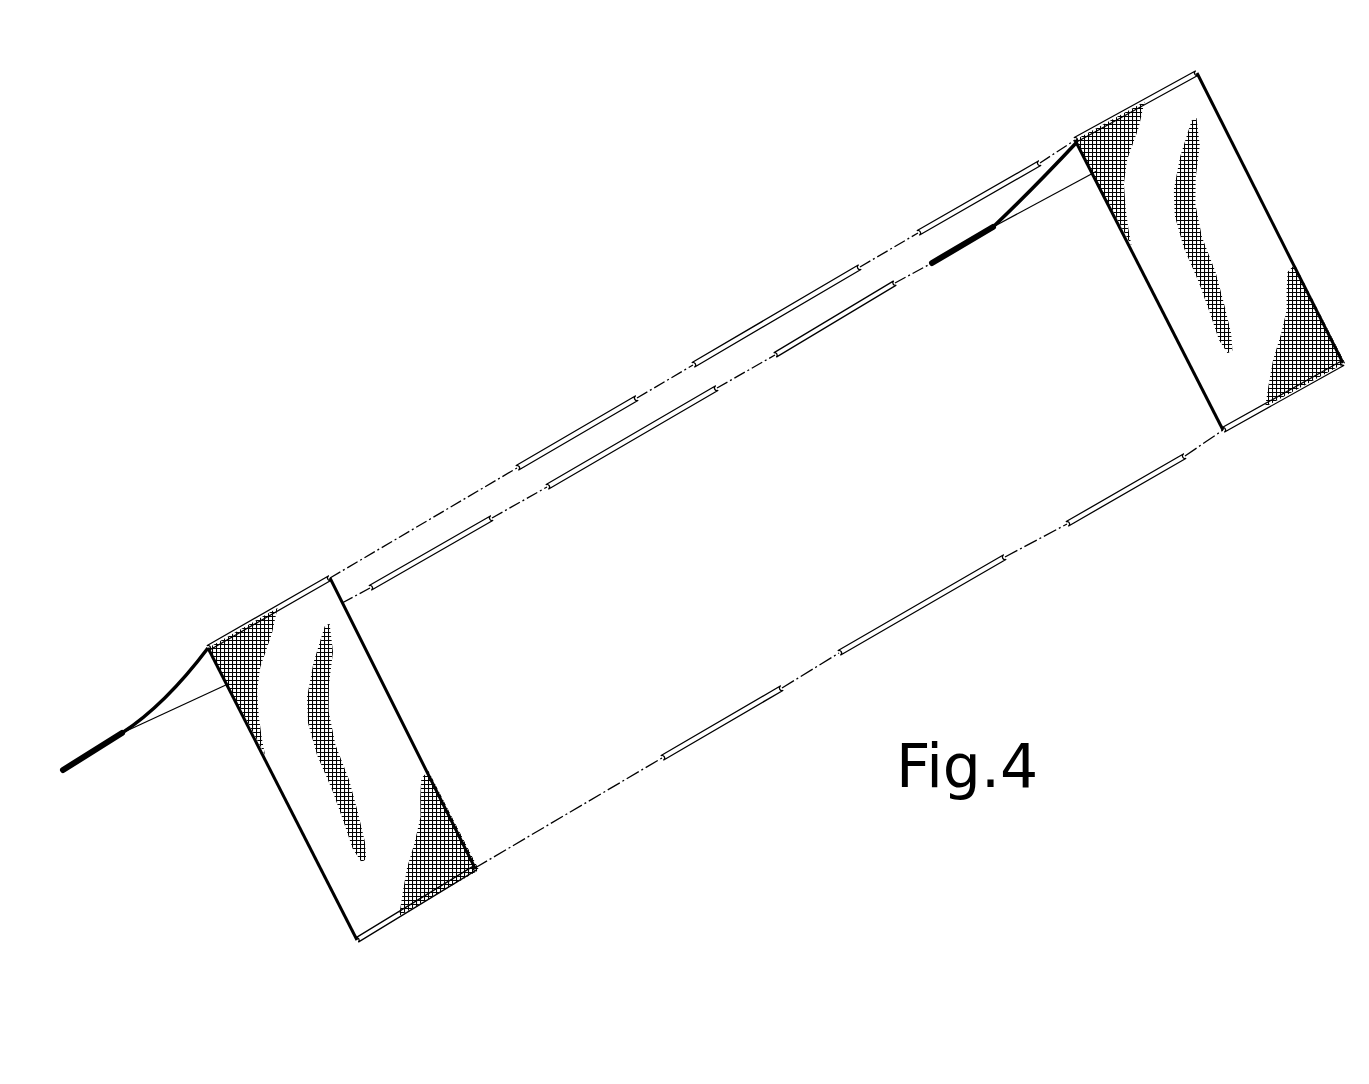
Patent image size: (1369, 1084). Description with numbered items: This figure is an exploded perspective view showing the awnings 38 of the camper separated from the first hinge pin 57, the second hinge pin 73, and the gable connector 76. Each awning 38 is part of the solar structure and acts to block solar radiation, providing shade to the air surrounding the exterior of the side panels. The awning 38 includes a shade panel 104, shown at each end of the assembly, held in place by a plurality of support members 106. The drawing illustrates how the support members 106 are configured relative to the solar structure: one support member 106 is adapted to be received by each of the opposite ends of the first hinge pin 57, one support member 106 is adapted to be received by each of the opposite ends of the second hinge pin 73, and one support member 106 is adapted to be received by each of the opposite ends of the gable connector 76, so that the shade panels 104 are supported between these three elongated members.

The awning 38 is at (224, 584).
The first hinge pin 57 is at (762, 322).
The second hinge pin 73 is at (928, 606).
The gable connector 76 is at (684, 412).
The shade panel 104 is at (300, 793).
The support member 106 is at (967, 200).